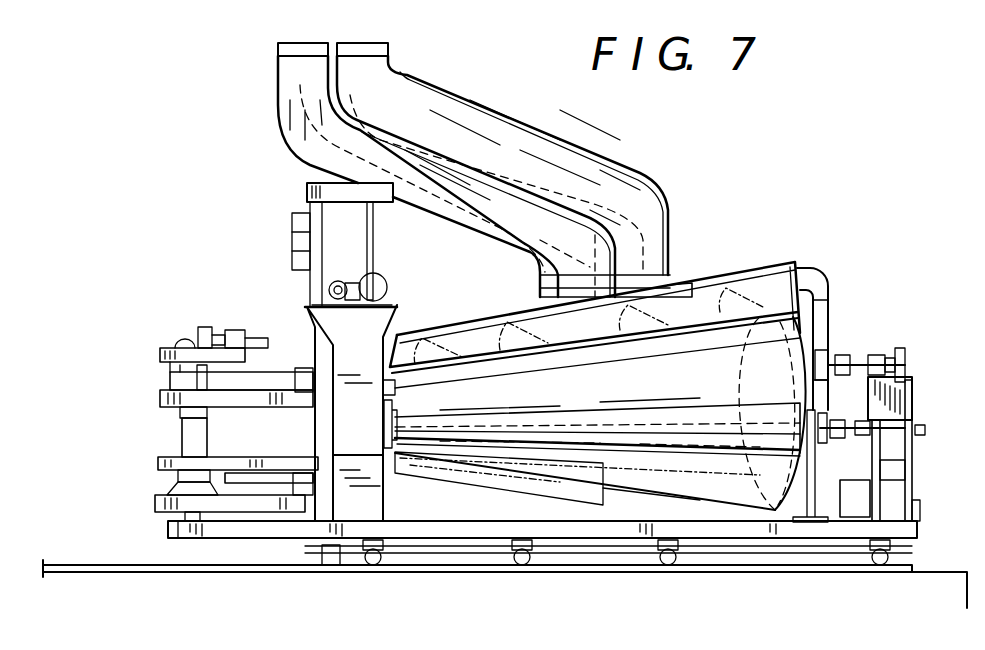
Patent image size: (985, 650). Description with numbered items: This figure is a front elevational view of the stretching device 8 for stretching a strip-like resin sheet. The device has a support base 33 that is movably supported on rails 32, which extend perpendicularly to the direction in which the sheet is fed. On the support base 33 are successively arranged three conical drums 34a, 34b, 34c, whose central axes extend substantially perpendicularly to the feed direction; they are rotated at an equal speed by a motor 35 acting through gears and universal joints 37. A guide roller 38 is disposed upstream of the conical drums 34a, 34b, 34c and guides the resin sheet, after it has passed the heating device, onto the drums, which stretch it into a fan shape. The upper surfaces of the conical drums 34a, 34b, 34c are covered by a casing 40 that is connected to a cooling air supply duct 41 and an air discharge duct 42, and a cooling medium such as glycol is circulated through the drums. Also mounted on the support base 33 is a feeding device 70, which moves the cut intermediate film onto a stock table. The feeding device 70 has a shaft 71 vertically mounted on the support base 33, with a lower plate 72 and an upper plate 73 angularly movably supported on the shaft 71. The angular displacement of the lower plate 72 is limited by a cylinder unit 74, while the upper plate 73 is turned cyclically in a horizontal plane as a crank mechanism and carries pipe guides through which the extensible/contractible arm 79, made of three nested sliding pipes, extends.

The stretching device 8 is at (831, 254).
The rails 32 is at (143, 573).
The support base 33 is at (255, 538).
The conical drum 34a is at (725, 350).
The conical drum 34b is at (760, 500).
The conical drum 34c is at (775, 345).
The motor 35 is at (858, 495).
The universal joints 37 is at (830, 355).
The guide roller 38 is at (705, 445).
The casing 40 is at (693, 278).
The cooling air supply duct 41 is at (510, 133).
The air discharge duct 42 is at (338, 137).
The feeding device 70 is at (165, 336).
The shaft 71 is at (195, 435).
The lower plate 72 is at (165, 462).
The upper plate 73 is at (165, 398).
The cylinder unit 74 is at (293, 460).
The extensible/contractible arm 79 is at (275, 378).